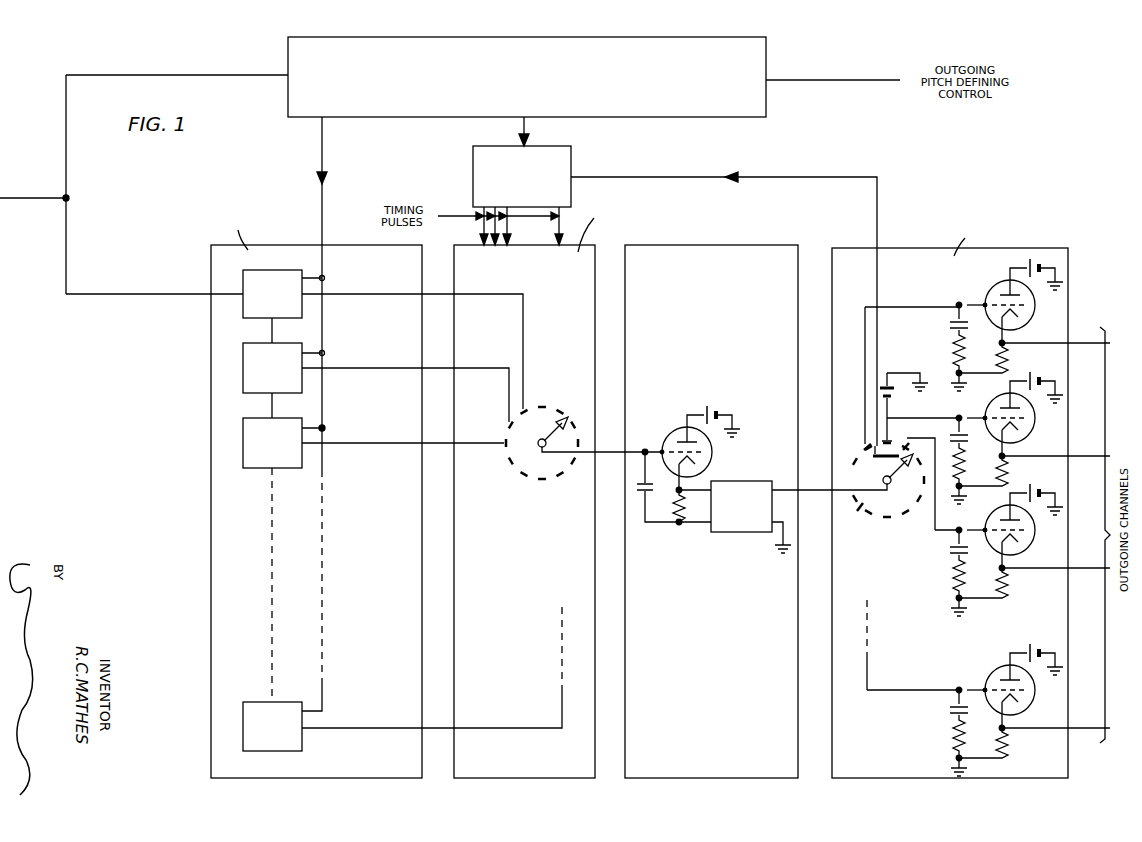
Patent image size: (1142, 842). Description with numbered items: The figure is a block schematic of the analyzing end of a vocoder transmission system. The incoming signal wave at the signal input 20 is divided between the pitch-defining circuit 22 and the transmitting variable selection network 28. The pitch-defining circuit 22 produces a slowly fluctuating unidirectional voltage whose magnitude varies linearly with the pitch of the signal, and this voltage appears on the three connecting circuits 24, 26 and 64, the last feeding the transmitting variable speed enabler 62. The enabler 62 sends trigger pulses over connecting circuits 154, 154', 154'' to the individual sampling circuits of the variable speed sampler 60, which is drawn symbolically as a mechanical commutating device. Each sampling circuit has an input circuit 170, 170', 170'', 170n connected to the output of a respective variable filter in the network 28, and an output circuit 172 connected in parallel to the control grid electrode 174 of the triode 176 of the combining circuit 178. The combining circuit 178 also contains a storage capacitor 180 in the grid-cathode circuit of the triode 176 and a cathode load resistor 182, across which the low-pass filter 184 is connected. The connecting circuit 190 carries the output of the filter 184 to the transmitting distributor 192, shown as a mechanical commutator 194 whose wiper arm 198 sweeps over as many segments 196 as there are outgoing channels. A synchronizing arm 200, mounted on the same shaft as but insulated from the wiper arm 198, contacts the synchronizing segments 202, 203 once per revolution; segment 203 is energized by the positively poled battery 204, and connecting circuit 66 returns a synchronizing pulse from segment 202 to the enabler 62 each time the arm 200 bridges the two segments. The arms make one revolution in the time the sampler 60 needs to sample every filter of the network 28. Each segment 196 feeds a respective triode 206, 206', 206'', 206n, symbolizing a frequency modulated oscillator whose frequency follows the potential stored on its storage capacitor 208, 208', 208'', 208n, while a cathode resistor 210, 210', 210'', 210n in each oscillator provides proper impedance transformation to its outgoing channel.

The signal input 20 is at (14, 204).
The pitch-defining circuit 22 is at (756, 53).
The connecting circuit 24 is at (820, 81).
The connecting circuit 26 is at (324, 166).
The transmitting variable selection network 28 is at (214, 272).
The variable speed sampler 60 is at (587, 271).
The variable speed enabler 62 is at (572, 157).
The connecting circuit 64 is at (528, 138).
The enabler output lead 66 is at (632, 177).
The connecting circuit 154 is at (500, 226).
The connecting circuit 154' is at (522, 226).
The connecting circuit 154'' is at (521, 237).
The input circuit 170 is at (412, 333).
The input circuit 170' is at (405, 378).
The input circuit 170'' is at (403, 427).
The input circuit 170n is at (435, 725).
The output circuit 172 is at (605, 453).
The control grid electrode 174 is at (670, 445).
The triode 176 is at (706, 446).
The combining circuit 178 is at (782, 256).
The storage capacitor 180 is at (640, 500).
The cathode load resistor 182 is at (683, 520).
The low-pass filter 184 is at (742, 484).
The connecting circuit 190 is at (806, 488).
The transmitting distributor 192 is at (1060, 256).
The mechanical commutator 194 is at (884, 517).
The segments 196 is at (865, 506).
The wiper arm 198 is at (907, 470).
The synchronizing arm 200 is at (879, 462).
The synchronizing segment 202 is at (862, 450).
The synchronizing segment 203 is at (900, 446).
The battery 204 is at (885, 383).
The triode 206 is at (1017, 301).
The triode 206' is at (1020, 414).
The triode 206'' is at (1019, 526).
The triode 206n is at (1026, 700).
The storage capacitor 208 is at (932, 346).
The storage capacitor 208' is at (933, 450).
The storage capacitor 208'' is at (932, 571).
The storage capacitor 208n is at (946, 708).
The cathode resistor 210 is at (1034, 356).
The cathode resistor 210' is at (1034, 469).
The cathode resistor 210'' is at (1034, 583).
The cathode resistor 210n is at (1012, 748).